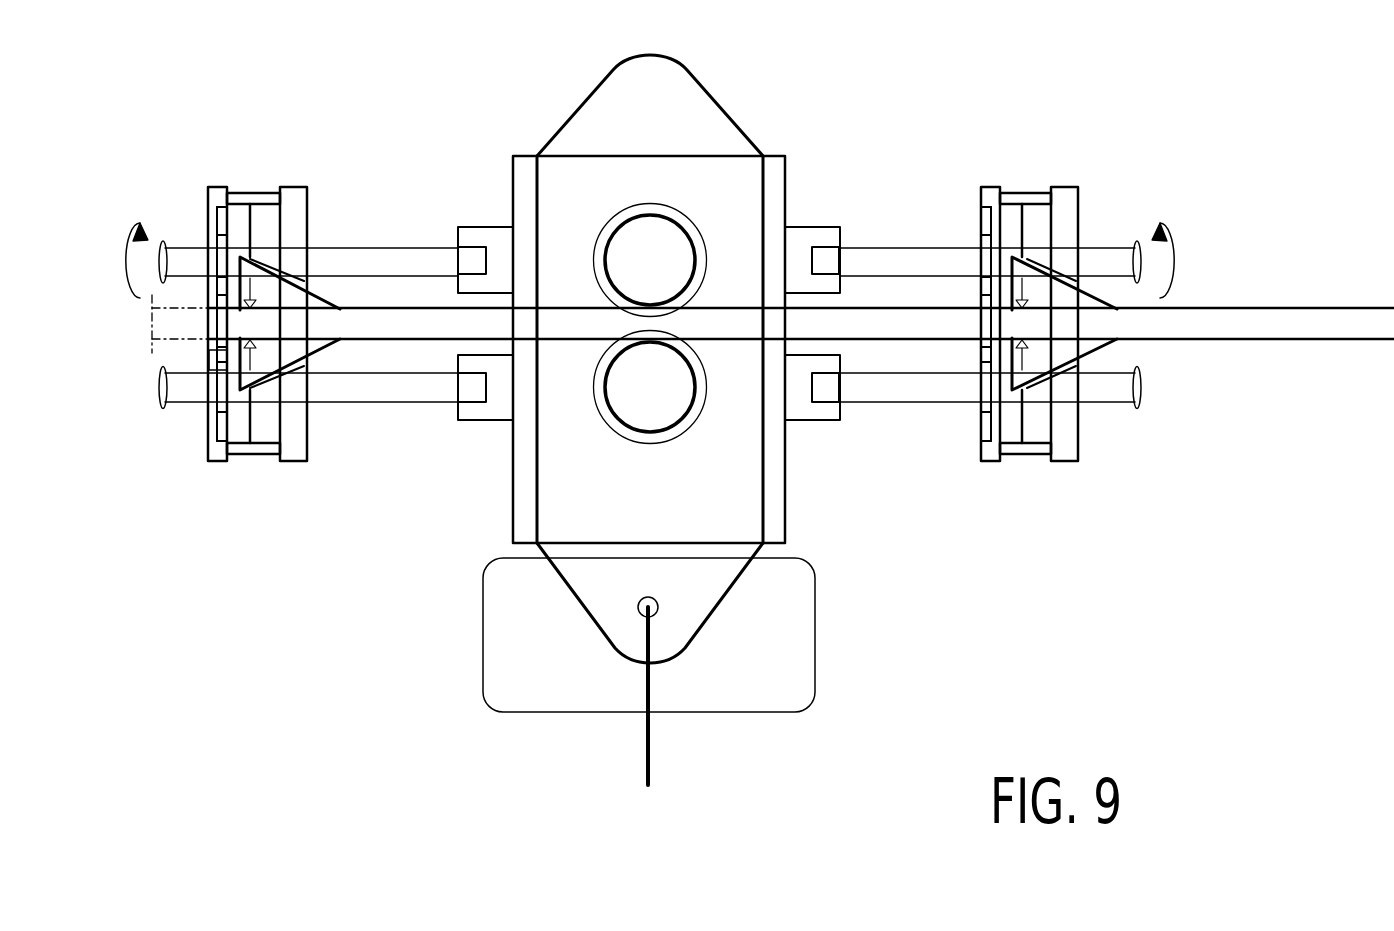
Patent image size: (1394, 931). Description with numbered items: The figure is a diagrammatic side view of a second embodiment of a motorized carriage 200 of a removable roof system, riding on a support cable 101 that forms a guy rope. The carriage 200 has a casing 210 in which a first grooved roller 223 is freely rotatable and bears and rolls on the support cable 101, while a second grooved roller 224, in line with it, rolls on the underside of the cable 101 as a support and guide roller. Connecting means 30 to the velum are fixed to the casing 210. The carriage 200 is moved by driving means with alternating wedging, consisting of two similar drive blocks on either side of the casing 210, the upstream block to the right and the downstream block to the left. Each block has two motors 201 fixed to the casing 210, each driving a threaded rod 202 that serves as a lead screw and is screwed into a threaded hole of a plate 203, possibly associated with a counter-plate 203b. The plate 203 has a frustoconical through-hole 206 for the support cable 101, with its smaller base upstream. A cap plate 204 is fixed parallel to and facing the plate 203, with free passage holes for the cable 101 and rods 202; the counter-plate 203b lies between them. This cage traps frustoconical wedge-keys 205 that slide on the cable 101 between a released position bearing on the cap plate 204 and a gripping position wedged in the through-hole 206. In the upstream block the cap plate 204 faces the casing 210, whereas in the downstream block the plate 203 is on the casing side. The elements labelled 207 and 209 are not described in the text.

The connecting means 30 is at (652, 748).
The support cable 101 is at (1307, 329).
The motorized carriage 200 is at (300, 675).
The motor 201 is at (492, 225).
The threaded rod 202 is at (1103, 245).
The plate 203 is at (290, 185).
The counter-plate 203b is at (267, 430).
The cap plate 204 is at (222, 187).
The frustoconical wedge-keys 205 is at (315, 300).
The through-hole 206 is at (300, 270).
The sensor 207 is at (215, 362).
The left shafts 209 is at (175, 245).
The casing 210 is at (729, 172).
The first grooved roller 223 is at (613, 227).
The second grooved roller 224 is at (612, 420).